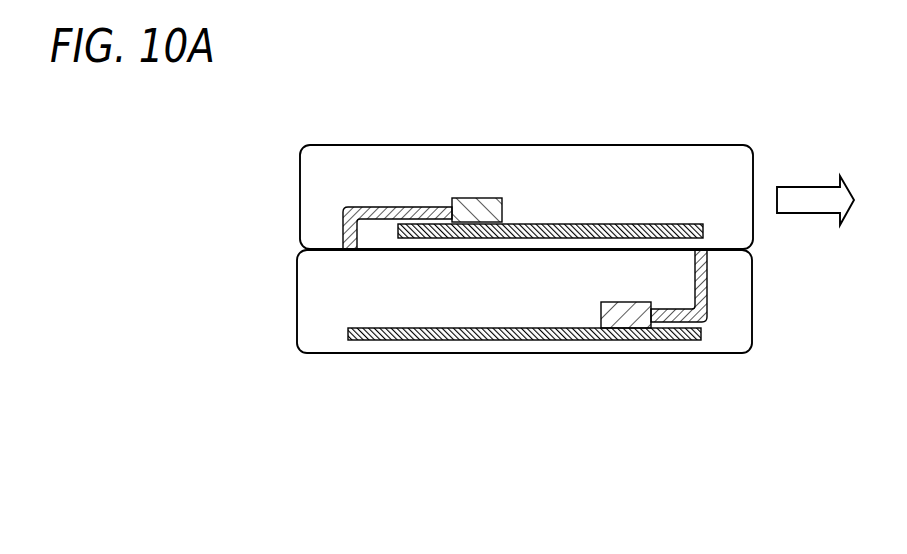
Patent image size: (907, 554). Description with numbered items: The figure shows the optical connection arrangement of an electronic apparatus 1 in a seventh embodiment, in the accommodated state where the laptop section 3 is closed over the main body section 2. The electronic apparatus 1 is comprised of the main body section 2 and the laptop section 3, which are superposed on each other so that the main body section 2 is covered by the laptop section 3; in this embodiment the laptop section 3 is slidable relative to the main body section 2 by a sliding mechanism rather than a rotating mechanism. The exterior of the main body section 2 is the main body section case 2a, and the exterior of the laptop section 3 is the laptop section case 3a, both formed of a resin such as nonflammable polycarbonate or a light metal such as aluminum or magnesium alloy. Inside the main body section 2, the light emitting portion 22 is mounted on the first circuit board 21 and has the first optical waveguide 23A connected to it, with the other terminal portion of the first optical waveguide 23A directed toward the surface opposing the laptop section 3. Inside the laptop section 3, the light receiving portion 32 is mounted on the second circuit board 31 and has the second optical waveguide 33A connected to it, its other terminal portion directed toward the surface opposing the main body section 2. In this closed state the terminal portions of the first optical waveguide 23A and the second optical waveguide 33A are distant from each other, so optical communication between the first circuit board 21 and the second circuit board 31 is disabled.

The electronic apparatus 1 is at (737, 131).
The main body section 2 is at (348, 301).
The main body section case 2a is at (500, 353).
The first circuit board 21 is at (702, 334).
The light emitting portion 22 is at (707, 313).
The first optical waveguide 23A is at (707, 276).
The laptop section 3 is at (372, 146).
The laptop section case 3a is at (455, 145).
The second circuit board 31 is at (398, 231).
The light receiving portion 32 is at (452, 199).
The second optical waveguide 33A is at (343, 208).